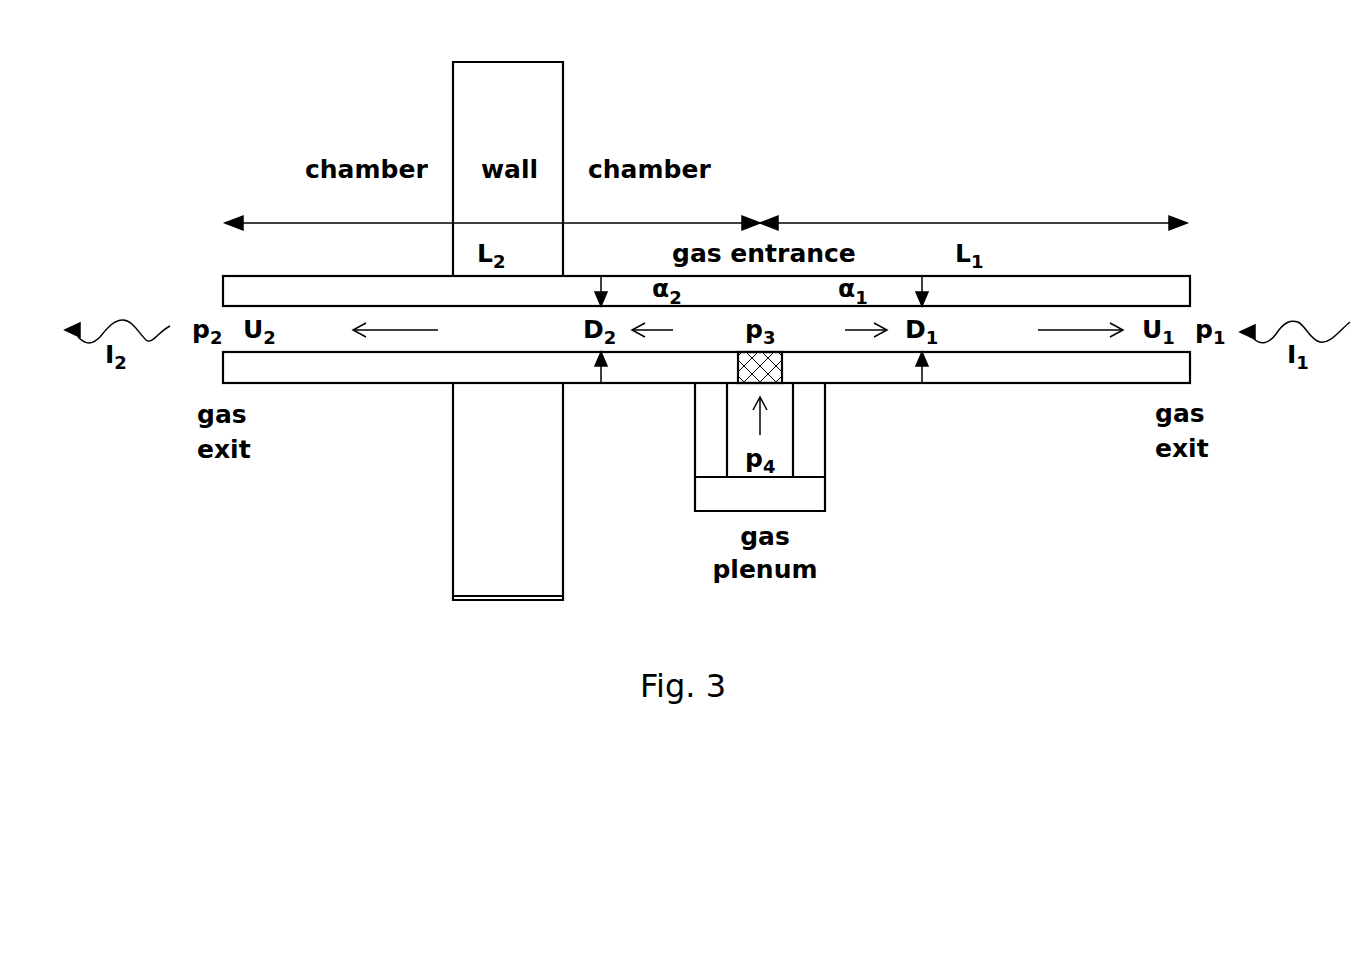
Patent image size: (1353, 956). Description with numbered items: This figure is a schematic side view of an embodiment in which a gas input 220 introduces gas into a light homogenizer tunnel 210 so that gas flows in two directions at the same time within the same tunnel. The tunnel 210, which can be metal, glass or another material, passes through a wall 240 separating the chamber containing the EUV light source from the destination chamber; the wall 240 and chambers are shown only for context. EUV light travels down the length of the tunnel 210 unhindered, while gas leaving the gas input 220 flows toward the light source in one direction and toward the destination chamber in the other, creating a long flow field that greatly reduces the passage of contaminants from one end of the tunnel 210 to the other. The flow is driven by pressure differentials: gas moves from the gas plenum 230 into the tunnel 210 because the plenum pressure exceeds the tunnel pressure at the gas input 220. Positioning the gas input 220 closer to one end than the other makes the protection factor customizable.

The light homogenizer tunnel 210 is at (990, 383).
The gas input 220 is at (738, 366).
The gas plenum 230 is at (820, 495).
The chamber wall 240 is at (480, 529).